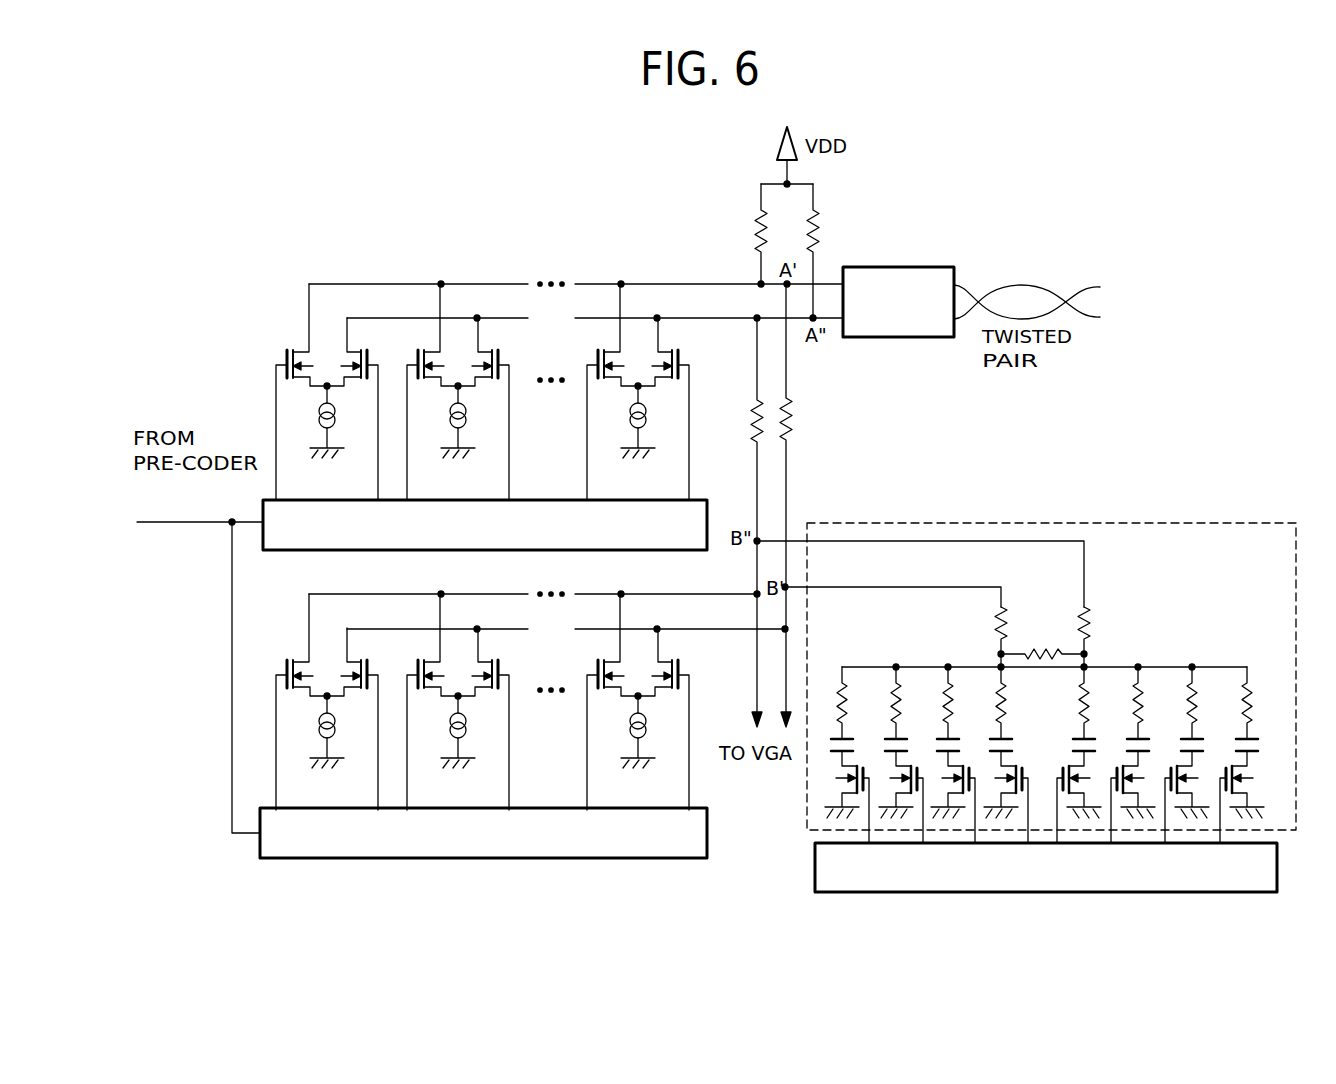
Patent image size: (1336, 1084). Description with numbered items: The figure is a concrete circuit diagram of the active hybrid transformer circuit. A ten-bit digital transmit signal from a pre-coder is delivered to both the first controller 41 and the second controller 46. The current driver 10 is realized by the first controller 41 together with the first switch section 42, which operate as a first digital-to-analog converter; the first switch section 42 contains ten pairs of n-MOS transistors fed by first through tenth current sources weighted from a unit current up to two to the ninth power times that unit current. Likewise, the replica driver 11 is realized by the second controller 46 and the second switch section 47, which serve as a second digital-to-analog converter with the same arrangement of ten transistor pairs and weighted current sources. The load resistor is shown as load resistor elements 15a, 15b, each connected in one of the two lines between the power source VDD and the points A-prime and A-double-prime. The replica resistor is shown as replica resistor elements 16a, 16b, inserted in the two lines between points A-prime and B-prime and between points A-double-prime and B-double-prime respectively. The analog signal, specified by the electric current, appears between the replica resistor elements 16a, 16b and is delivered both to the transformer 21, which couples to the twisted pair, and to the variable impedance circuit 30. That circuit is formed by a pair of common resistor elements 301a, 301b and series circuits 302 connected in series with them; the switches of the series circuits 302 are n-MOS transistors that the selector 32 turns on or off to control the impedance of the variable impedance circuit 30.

The current driver 10 is at (475, 392).
The replica driver 11 is at (441, 702).
The load resistor element 15a is at (753, 230).
The load resistor element 15b is at (820, 230).
The replica resistor element 16a is at (792, 426).
The replica resistor element 16b is at (752, 436).
The transformer 21 is at (928, 267).
The variable impedance circuit 30 is at (1183, 523).
The selector 32 is at (908, 894).
The first controller 41 is at (684, 552).
The first switch section 42 is at (686, 356).
The second controller 46 is at (684, 860).
The second switch section 47 is at (660, 638).
The common resistor element 301a is at (1012, 621).
The common resistor element 301b is at (1092, 621).
The series circuits 302 is at (938, 648).